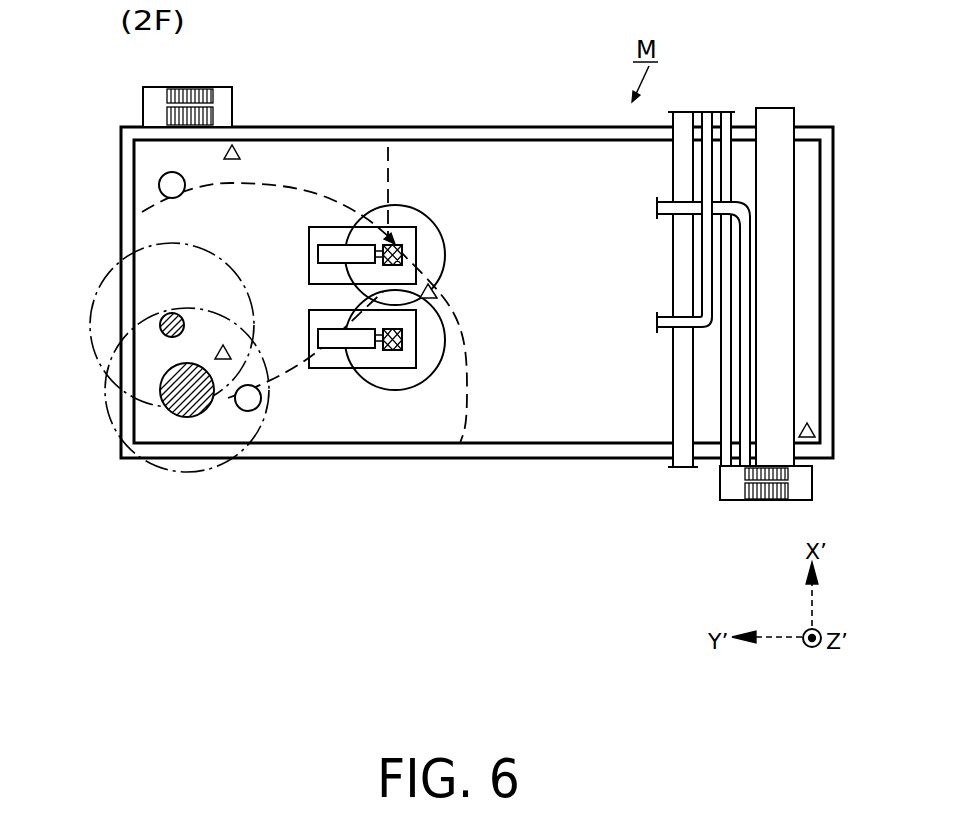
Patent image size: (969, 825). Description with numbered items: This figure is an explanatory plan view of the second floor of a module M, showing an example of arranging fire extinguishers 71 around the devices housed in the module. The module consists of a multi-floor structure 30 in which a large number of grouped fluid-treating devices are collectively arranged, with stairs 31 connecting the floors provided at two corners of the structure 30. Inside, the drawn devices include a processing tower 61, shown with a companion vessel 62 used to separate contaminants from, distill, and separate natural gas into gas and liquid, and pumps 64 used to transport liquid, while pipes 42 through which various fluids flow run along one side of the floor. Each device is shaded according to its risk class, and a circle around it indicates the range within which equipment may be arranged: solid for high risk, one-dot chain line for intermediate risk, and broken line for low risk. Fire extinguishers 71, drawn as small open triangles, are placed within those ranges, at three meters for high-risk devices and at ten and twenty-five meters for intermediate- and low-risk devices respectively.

The structure 30 is at (553, 128).
The stairs 31 is at (220, 86).
The pipes 42 is at (732, 165).
The processing tower 61 is at (160, 329).
The vessel 62 is at (159, 186).
The pumps 64 is at (330, 247).
The fire extinguisher 71 is at (241, 152).